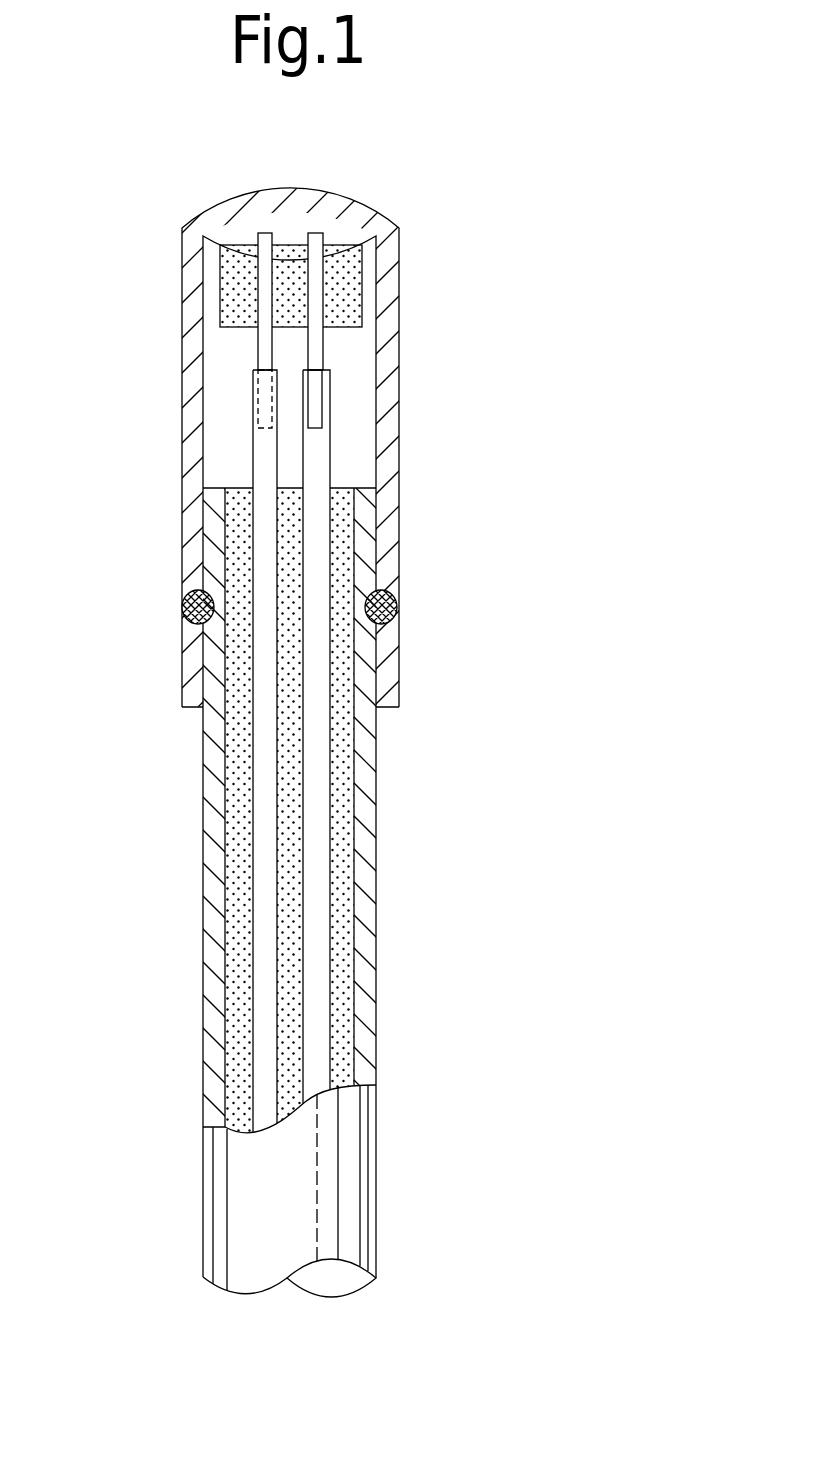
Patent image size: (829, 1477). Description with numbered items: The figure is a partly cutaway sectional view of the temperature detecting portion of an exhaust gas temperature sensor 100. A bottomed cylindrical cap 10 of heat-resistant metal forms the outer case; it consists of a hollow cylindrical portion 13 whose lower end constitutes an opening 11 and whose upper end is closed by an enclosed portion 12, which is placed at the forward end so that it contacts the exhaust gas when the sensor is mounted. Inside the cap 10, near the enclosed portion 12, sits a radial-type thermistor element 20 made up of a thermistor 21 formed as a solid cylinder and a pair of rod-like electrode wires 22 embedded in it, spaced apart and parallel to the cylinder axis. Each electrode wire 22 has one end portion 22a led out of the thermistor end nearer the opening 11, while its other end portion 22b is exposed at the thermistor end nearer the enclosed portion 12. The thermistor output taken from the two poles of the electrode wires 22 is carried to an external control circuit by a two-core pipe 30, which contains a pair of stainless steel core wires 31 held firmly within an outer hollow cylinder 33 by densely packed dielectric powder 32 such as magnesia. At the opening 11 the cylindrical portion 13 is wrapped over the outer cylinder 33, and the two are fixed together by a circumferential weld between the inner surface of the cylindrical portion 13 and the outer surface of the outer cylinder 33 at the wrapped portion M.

The temperature sensor 100 is at (165, 240).
The cap 10 is at (400, 436).
The opening 11 is at (378, 710).
The enclosed portion 12 is at (360, 217).
The hollow cylindrical portion 13 is at (390, 347).
The thermistor element 20 is at (72, 272).
The thermistor 21 is at (230, 298).
The electrode wires 22 is at (262, 338).
The end portion of electrode wire 22a is at (257, 420).
The other end portion of electrode wire 22b is at (263, 232).
The wrapped portion M is at (184, 609).
The two-core pipe 30 is at (248, 1182).
The core wires 31 is at (258, 959).
The dielectric powder 32 is at (237, 826).
The outer hollow cylinder 33 is at (210, 752).